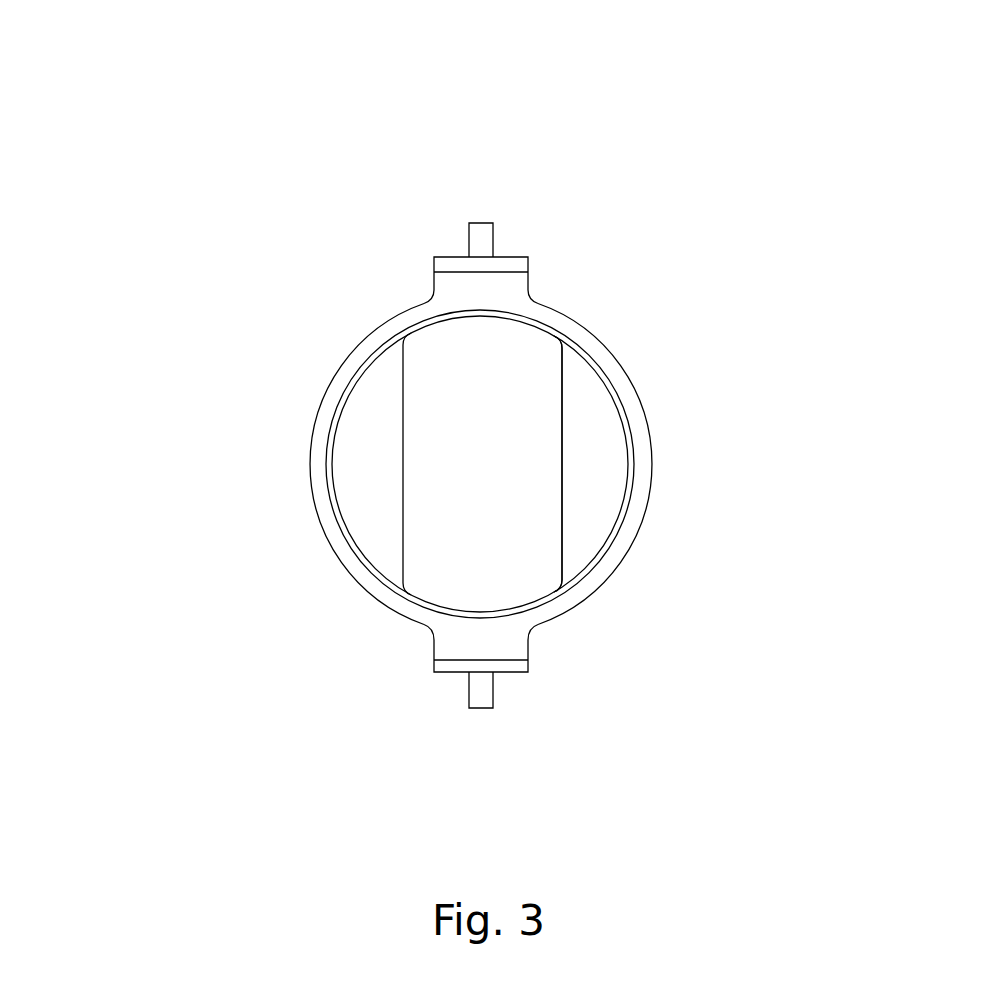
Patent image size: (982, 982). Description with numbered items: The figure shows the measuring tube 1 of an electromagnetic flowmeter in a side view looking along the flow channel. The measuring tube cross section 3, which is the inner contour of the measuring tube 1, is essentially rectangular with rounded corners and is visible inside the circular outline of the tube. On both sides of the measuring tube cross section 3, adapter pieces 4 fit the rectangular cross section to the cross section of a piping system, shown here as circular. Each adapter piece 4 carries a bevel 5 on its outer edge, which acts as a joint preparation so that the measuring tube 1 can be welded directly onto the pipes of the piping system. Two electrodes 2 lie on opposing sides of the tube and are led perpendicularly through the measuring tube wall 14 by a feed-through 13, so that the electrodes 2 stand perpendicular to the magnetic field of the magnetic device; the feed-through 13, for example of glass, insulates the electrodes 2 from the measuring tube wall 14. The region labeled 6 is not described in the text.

The measuring tube 1 is at (267, 361).
The electrode 2 is at (483, 240).
The measuring tube cross section 3 is at (423, 343).
The adapter piece 4 is at (613, 422).
The bevel 5 is at (345, 560).
The disc sealing edge 6 is at (538, 452).
The feed-through 13 is at (517, 263).
The measuring tube wall 14 is at (652, 478).